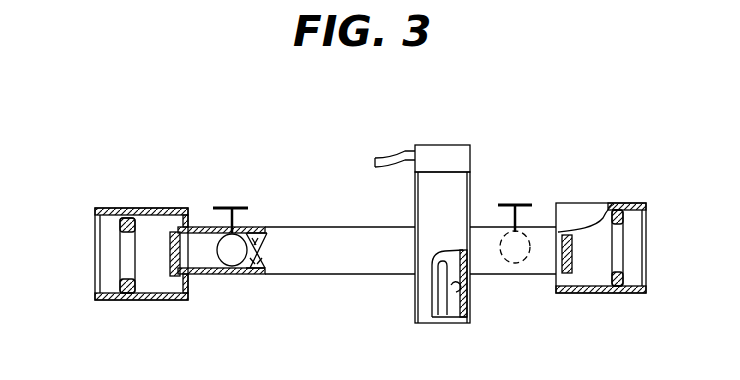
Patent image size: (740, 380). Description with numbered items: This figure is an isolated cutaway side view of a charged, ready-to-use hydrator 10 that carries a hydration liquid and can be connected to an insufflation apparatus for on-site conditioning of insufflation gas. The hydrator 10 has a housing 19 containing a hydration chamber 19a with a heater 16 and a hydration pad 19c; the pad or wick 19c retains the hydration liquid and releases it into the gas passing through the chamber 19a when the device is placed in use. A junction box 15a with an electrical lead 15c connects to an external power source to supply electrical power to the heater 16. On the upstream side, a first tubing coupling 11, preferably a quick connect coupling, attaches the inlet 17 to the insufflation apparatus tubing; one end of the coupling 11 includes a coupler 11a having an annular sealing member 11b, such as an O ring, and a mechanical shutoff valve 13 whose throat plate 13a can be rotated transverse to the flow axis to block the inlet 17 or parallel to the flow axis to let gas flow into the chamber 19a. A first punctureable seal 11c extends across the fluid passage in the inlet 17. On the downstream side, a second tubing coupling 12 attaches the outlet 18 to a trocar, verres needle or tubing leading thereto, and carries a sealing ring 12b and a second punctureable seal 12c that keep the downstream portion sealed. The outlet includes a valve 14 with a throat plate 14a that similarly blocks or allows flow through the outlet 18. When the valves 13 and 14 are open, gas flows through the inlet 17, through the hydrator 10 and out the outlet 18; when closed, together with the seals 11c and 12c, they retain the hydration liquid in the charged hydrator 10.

The ready-to-use hydrator 10 is at (343, 178).
The first tubing coupling 11 is at (205, 227).
The coupler 11a is at (113, 208).
The annular sealing member 11b is at (128, 293).
The first punctureable seal 11c is at (173, 277).
The second tubing coupling 12 is at (598, 203).
The sealing ring 12b is at (641, 220).
The second punctureable seal 12c is at (574, 274).
The mechanical shutoff valve 13 is at (232, 206).
The throat plate 13a is at (246, 247).
The outlet valve 14 is at (515, 204).
The throat plate 14a is at (537, 224).
The junction box 15a is at (470, 145).
The electrical lead 15c is at (395, 159).
The heater 16 is at (457, 323).
The inlet 17 is at (303, 274).
The outlet 18 is at (525, 274).
The housing 19 is at (433, 312).
The hydration chamber 19a is at (460, 291).
The hydration pad 19c is at (442, 318).